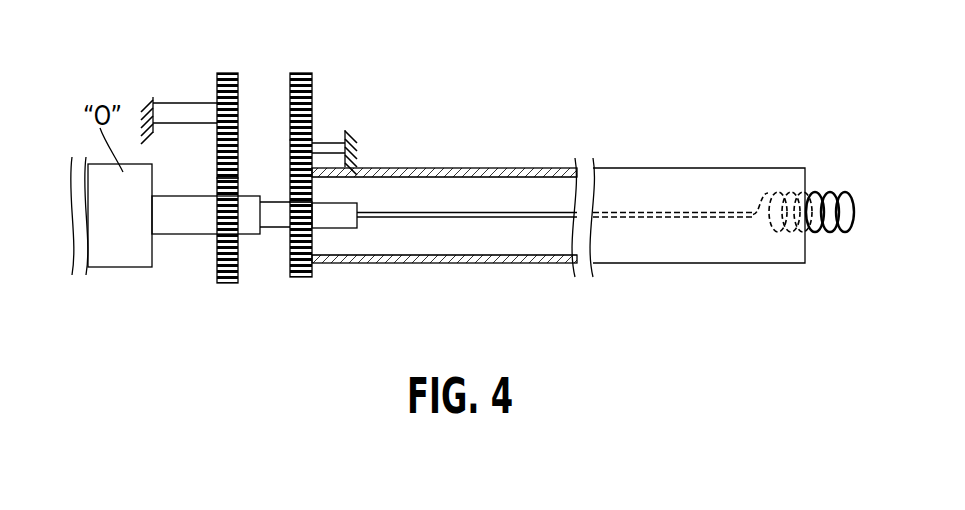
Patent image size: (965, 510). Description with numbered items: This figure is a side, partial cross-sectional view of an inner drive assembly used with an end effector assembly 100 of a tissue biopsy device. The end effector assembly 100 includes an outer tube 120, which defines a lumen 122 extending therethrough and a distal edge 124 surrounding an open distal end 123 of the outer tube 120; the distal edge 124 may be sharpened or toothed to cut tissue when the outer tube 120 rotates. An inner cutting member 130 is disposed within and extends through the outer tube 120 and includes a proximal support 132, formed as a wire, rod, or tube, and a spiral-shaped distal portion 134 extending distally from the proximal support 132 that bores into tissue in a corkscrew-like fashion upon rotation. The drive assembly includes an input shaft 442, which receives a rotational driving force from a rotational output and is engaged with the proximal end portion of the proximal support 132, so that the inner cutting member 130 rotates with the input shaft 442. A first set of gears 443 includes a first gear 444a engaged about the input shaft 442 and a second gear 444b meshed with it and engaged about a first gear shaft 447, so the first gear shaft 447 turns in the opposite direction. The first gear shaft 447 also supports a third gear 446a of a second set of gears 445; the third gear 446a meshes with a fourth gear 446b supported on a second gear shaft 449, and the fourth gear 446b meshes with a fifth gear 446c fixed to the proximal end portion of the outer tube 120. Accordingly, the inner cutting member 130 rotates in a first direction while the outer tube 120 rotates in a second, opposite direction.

The end effector assembly 100 is at (629, 192).
The outer tube 120 is at (533, 264).
The lumen 122 is at (443, 246).
The open distal end 123 is at (723, 264).
The distal edge 124 is at (806, 166).
The inner cutting member 130 is at (513, 210).
The proximal support 132 is at (348, 229).
The spiral-shaped distal portion 134 is at (858, 195).
The input shaft 442 is at (184, 236).
The first set of gears 443 is at (203, 204).
The first gear 444a is at (228, 284).
The second gear 444b is at (230, 73).
The second set of gears 445 is at (300, 195).
The third gear 446a is at (302, 73).
The fourth gear 446b is at (290, 147).
The fifth gear 446c is at (312, 287).
The first gear shaft 447 is at (175, 103).
The second gear shaft 449 is at (342, 128).